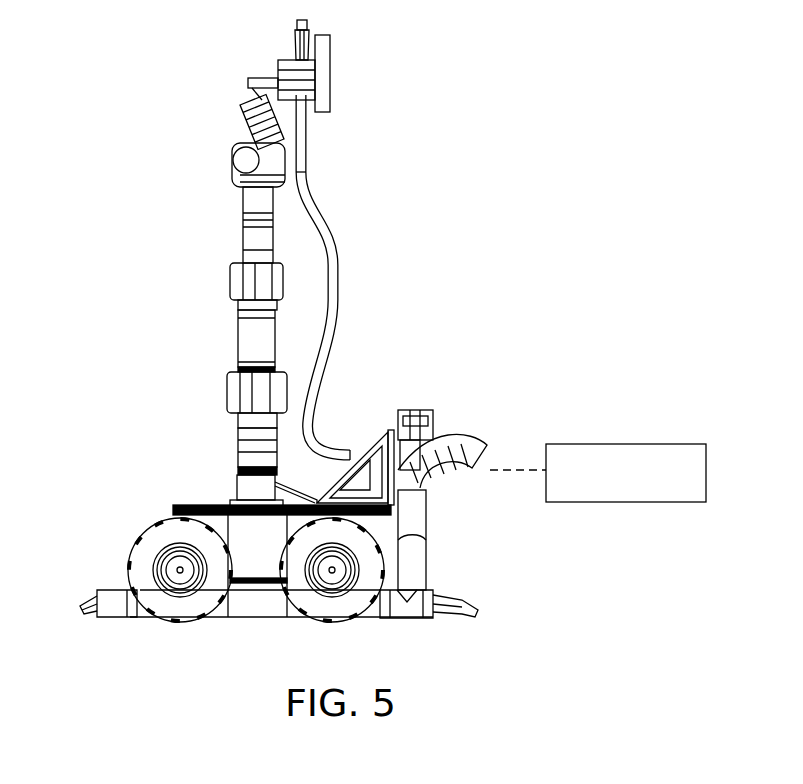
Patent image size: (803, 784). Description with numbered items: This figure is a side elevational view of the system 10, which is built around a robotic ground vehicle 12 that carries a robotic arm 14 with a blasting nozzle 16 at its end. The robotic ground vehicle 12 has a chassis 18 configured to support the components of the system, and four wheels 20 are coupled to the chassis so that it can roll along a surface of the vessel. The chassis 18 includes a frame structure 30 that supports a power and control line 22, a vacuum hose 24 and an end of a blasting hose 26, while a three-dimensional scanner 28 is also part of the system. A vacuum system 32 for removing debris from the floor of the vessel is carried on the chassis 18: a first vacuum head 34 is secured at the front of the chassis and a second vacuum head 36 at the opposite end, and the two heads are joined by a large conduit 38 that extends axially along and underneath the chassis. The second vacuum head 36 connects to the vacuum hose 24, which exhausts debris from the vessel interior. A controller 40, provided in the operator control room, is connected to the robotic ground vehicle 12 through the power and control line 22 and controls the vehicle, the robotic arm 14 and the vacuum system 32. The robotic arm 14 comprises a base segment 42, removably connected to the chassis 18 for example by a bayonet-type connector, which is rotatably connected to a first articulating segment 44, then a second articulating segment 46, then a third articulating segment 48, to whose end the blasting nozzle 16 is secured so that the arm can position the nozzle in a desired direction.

The system 10 is at (445, 185).
The robotic ground vehicle 12 is at (165, 504).
The robotic arm 14 is at (222, 162).
The blasting nozzle 16 is at (300, 20).
The chassis 18 is at (265, 550).
The wheels 20 is at (158, 618).
The power and control line 22 is at (450, 488).
The vacuum hose 24 is at (428, 412).
The blasting hose 26 is at (338, 300).
The 3D scanner 28 is at (330, 68).
The frame structure 30 is at (365, 450).
The vacuum system 32 is at (207, 628).
The first vacuum head 34 is at (108, 598).
The second vacuum head 36 is at (440, 597).
The conduit 38 is at (243, 603).
The controller 40 is at (610, 444).
The base segment 42 is at (237, 462).
The first articulating segment 44 is at (245, 332).
The second articulating segment 46 is at (250, 203).
The third articulating segment 48 is at (263, 120).